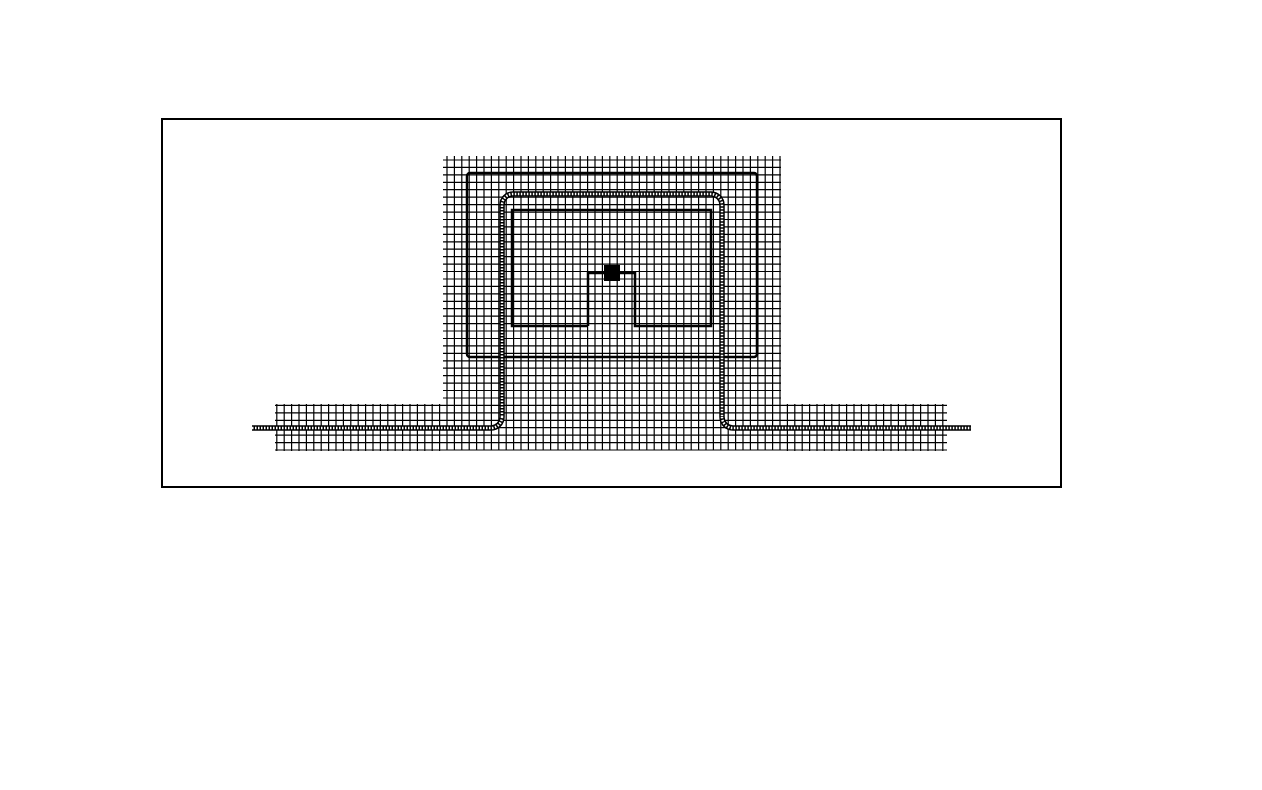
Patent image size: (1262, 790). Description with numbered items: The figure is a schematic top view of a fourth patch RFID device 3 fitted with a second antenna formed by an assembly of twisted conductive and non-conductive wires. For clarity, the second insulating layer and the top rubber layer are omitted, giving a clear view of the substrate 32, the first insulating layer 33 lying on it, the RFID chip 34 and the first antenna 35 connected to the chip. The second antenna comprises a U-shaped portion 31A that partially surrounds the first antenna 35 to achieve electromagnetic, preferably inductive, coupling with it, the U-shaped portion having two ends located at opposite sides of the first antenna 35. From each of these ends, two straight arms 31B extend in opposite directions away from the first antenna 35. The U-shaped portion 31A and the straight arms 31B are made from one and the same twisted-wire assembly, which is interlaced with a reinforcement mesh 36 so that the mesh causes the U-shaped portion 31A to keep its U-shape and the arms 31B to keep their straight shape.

The fourth patch RFID device 3 is at (1156, 121).
The U-shaped portion 31A is at (636, 191).
The straight arms 31B is at (316, 420).
The substrate 32 is at (206, 475).
The first insulating layer 33 is at (466, 183).
The RFID chip 34 is at (605, 270).
The first antenna 35 is at (668, 212).
The reinforcement mesh 36 is at (768, 255).